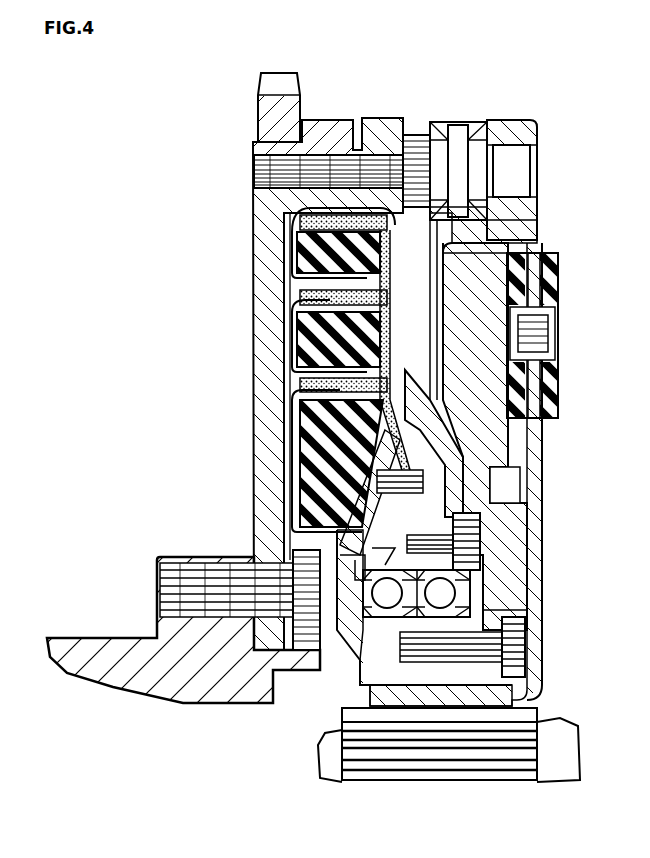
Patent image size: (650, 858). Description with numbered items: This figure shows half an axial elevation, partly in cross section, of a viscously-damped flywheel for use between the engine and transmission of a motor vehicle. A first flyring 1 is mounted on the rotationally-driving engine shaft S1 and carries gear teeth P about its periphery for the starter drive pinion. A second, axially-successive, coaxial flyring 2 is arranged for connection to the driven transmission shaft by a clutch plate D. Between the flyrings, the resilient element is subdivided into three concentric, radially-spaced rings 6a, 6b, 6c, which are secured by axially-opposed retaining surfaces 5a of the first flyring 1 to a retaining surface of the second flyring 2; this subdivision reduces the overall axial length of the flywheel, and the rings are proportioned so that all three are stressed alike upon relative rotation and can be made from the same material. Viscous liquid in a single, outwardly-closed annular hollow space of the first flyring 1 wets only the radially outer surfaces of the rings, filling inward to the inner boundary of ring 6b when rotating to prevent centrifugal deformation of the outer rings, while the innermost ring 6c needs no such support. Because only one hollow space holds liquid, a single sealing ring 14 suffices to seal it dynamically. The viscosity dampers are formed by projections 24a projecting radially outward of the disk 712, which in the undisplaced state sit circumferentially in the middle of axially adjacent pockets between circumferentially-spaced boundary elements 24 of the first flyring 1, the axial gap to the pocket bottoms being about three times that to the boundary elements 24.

The gear teeth P is at (258, 88).
The first flyring 1 is at (398, 118).
The second flyring 2 is at (507, 120).
The retaining surface 5a is at (300, 243).
The resilient element ring 6a is at (303, 290).
The resilient element ring 6b is at (303, 377).
The resilient element ring 6c is at (320, 420).
The projections 24a is at (432, 291).
The boundary elements 24 is at (432, 360).
The disk 712 is at (452, 413).
The clutch plate D is at (558, 292).
The sealing ring 14 is at (410, 523).
The engine shaft S1 is at (68, 637).